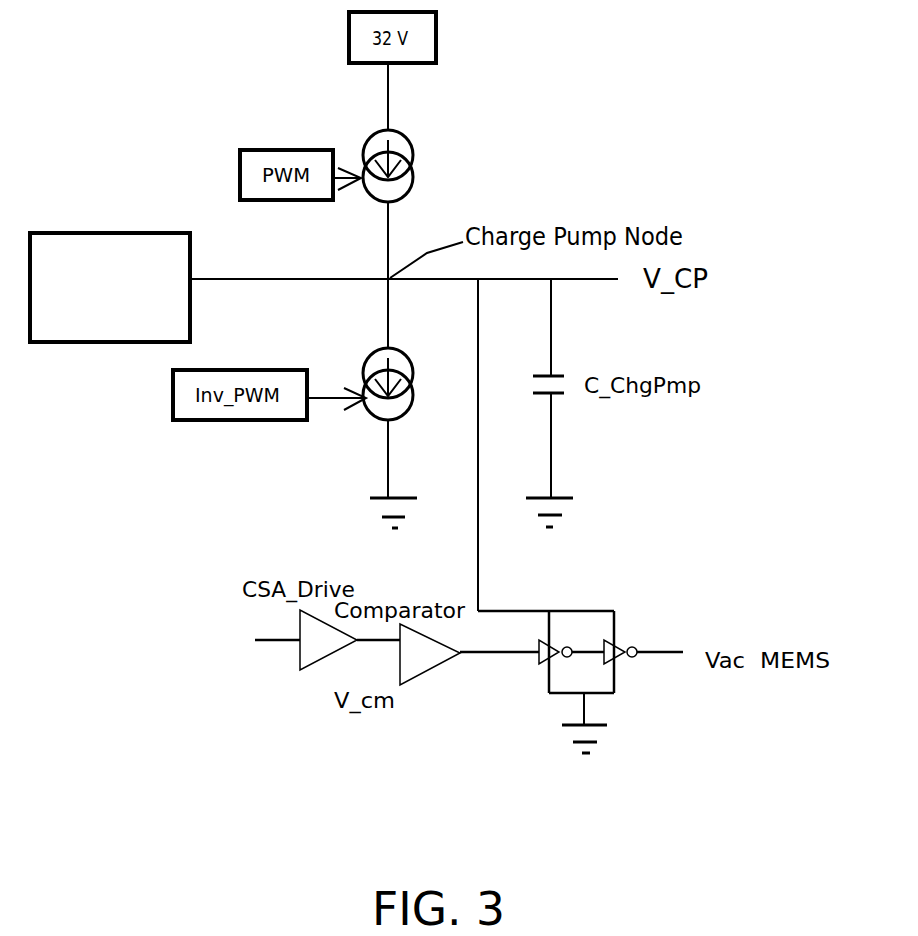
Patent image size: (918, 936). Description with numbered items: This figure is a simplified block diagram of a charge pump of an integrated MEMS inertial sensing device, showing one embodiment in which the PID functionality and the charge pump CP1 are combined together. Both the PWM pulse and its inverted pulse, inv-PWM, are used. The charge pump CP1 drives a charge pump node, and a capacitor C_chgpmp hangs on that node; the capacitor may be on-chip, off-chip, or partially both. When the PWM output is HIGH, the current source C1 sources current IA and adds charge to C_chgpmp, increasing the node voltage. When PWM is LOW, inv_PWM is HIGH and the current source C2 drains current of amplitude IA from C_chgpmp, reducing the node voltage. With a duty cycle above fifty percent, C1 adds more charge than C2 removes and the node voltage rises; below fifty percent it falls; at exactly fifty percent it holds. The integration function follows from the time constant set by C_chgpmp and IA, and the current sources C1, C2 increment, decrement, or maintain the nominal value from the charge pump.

The charge pump CP1 is at (110, 264).
The current source C1 is at (390, 153).
The current source C2 is at (389, 366).